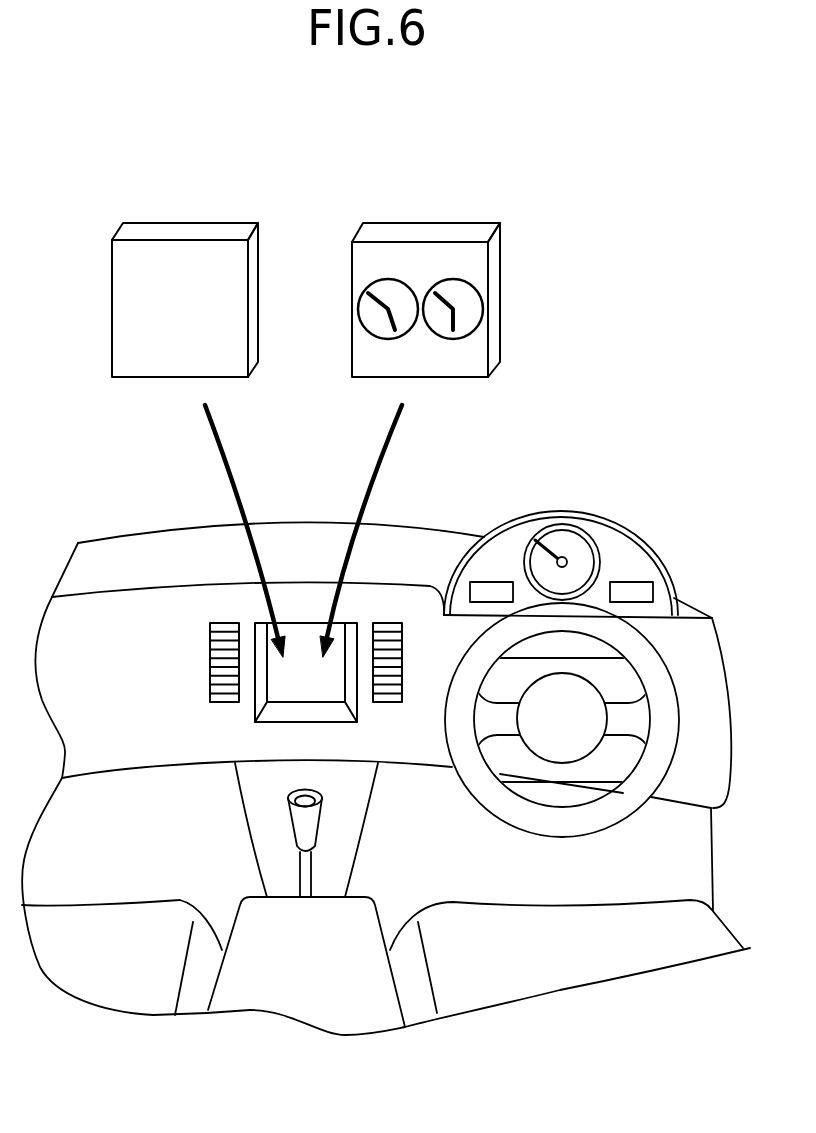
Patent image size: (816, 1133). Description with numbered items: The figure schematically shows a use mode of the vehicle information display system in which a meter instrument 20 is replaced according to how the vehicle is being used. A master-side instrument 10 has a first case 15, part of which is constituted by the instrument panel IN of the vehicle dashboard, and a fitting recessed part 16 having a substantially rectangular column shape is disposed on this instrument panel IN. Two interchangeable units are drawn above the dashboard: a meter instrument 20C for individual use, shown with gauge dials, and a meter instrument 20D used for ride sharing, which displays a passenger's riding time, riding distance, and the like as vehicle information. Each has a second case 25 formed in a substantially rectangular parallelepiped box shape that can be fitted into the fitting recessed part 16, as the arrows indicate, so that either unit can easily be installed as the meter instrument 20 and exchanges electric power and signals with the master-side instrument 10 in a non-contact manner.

The meter instrument 20 is at (306, 249).
The meter instrument used for ride sharing 20D is at (165, 198).
The meter instrument for individual use 20C is at (426, 249).
The second case 25 is at (306, 249).
The fitting recessed part 16 is at (348, 648).
The first case 15 is at (386, 738).
The master-side instrument 10 is at (386, 738).
The instrument panel IN is at (386, 738).